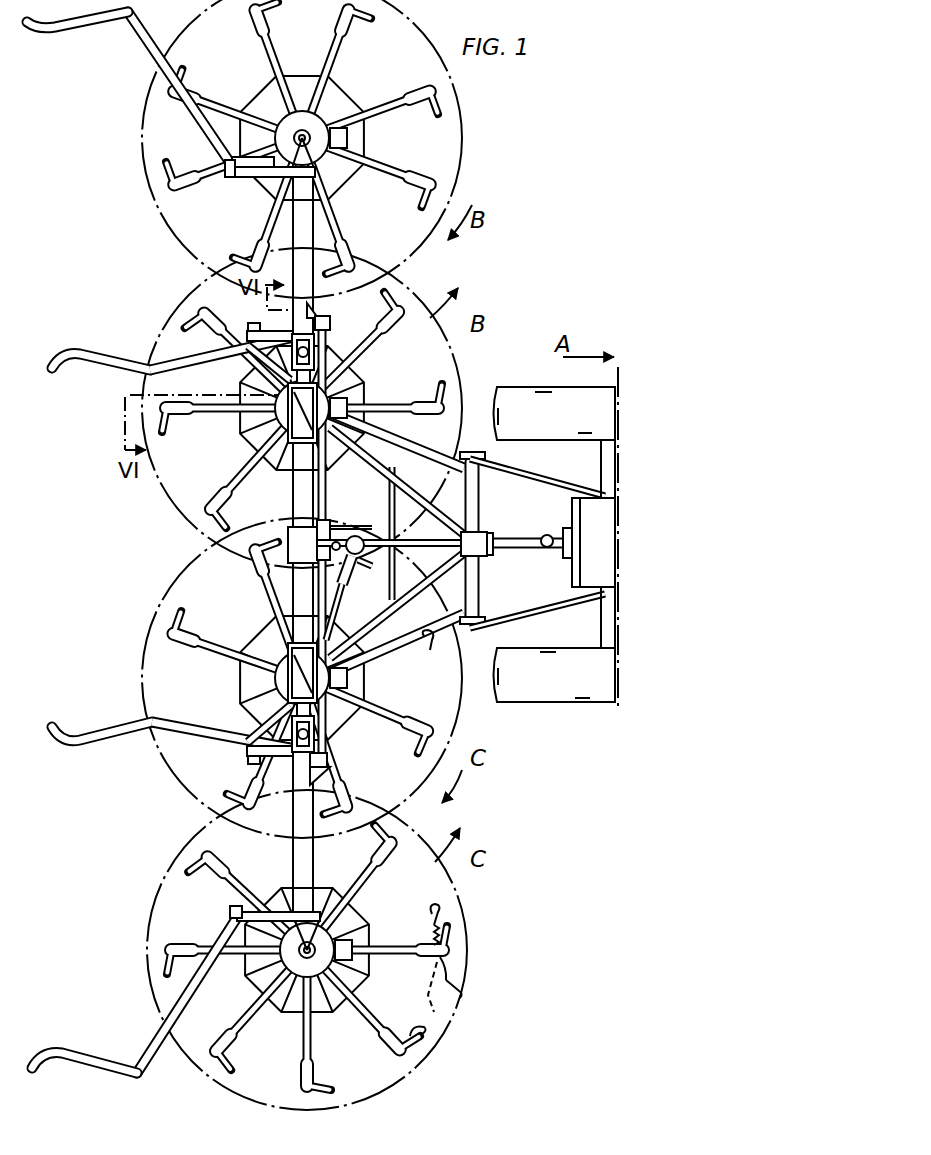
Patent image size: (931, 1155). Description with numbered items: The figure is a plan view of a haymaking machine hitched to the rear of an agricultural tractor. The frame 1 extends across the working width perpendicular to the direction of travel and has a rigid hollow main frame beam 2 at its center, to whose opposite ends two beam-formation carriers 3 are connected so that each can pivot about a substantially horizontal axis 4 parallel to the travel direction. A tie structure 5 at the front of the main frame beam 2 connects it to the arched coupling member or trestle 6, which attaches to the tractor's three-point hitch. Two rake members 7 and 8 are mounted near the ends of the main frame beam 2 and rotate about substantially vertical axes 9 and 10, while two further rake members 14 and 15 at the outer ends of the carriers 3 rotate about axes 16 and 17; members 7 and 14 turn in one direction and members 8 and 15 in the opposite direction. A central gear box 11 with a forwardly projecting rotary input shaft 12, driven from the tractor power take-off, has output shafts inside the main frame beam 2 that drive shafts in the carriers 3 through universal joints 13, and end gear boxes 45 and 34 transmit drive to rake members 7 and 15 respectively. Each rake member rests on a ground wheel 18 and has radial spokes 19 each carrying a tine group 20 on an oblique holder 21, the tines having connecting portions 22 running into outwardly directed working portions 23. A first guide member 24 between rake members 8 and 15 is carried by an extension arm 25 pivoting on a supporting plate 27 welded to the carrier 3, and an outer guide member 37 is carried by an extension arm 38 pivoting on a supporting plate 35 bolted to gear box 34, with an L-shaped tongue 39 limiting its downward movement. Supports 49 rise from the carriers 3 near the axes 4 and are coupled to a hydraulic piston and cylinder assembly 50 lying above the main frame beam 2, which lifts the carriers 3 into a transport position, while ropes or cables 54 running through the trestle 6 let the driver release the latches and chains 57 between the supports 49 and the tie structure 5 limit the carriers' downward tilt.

The frame 1 is at (312, 304).
The main frame beam 2 is at (295, 500).
The beam-formation carrier 3 is at (300, 226).
The substantially horizontal axis 4 is at (262, 378).
The tie structure 5 is at (446, 476).
The coupling member or trestle 6 is at (480, 493).
The rake member 7 is at (182, 514).
The rake member 8 is at (160, 628).
The substantially vertical axis 9 is at (287, 420).
The substantially vertical axis 10 is at (286, 674).
The gear box 11 is at (288, 545).
The rotary input shaft 12 is at (348, 565).
The universal joint 13 is at (316, 345).
The rake member 14 is at (163, 221).
The rake member 15 is at (160, 890).
The substantially vertical axis 16 is at (312, 128).
The substantially vertical axis 17 is at (296, 953).
The ground wheel 18 is at (348, 134).
The spoke 19 is at (333, 62).
The tine group 20 is at (447, 948).
The holder 21 is at (435, 915).
The tine connecting portion 22 is at (450, 962).
The working portion 23 is at (463, 992).
The first guide member 24 is at (122, 354).
The extension arm 25 is at (190, 358).
The supporting plate 27 is at (272, 330).
The gear box 34 is at (313, 150).
The supporting plate 35 is at (255, 178).
The outer guide member 37 is at (62, 30).
The extension arm 38 is at (152, 54).
The L-shaped tongue 39 is at (225, 177).
The gear box 45 is at (270, 415).
The support 49 is at (322, 310).
The hydraulic piston and cylinder assembly 50 is at (326, 500).
The rope or cable 54 is at (512, 552).
The chain 57 is at (362, 355).